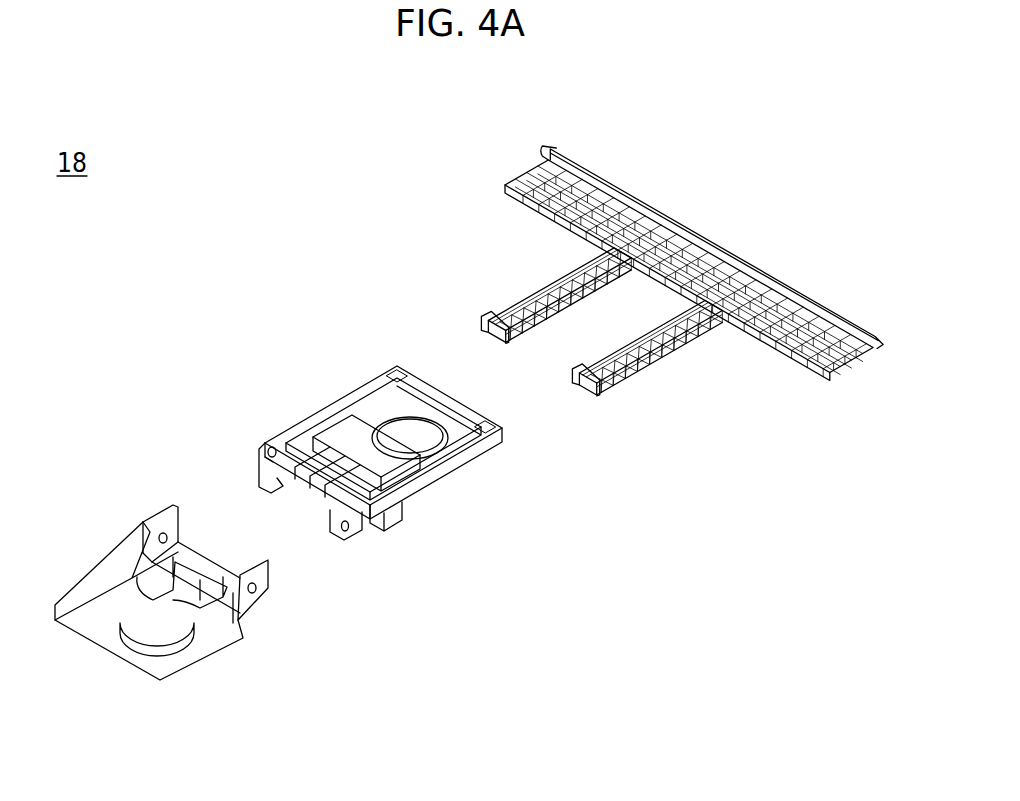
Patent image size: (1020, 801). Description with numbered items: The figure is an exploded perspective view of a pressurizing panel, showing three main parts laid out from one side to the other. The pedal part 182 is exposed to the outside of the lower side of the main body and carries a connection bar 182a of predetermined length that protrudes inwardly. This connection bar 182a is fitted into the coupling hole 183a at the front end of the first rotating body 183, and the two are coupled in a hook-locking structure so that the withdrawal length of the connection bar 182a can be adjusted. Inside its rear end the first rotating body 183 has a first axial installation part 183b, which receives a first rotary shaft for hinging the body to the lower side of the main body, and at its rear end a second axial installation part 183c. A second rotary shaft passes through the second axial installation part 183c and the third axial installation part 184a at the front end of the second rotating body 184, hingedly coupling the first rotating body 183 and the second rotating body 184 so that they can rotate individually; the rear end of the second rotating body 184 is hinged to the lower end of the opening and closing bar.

The pedal part 182 is at (682, 356).
The connection bar 182a is at (623, 368).
The first rotating body 183 is at (436, 419).
The coupling hole 183a is at (505, 432).
The first axial installation part 183b is at (388, 530).
The second axial installation part 183c is at (330, 535).
The second rotating body 184 is at (156, 529).
The third axial installation part 184a is at (252, 583).